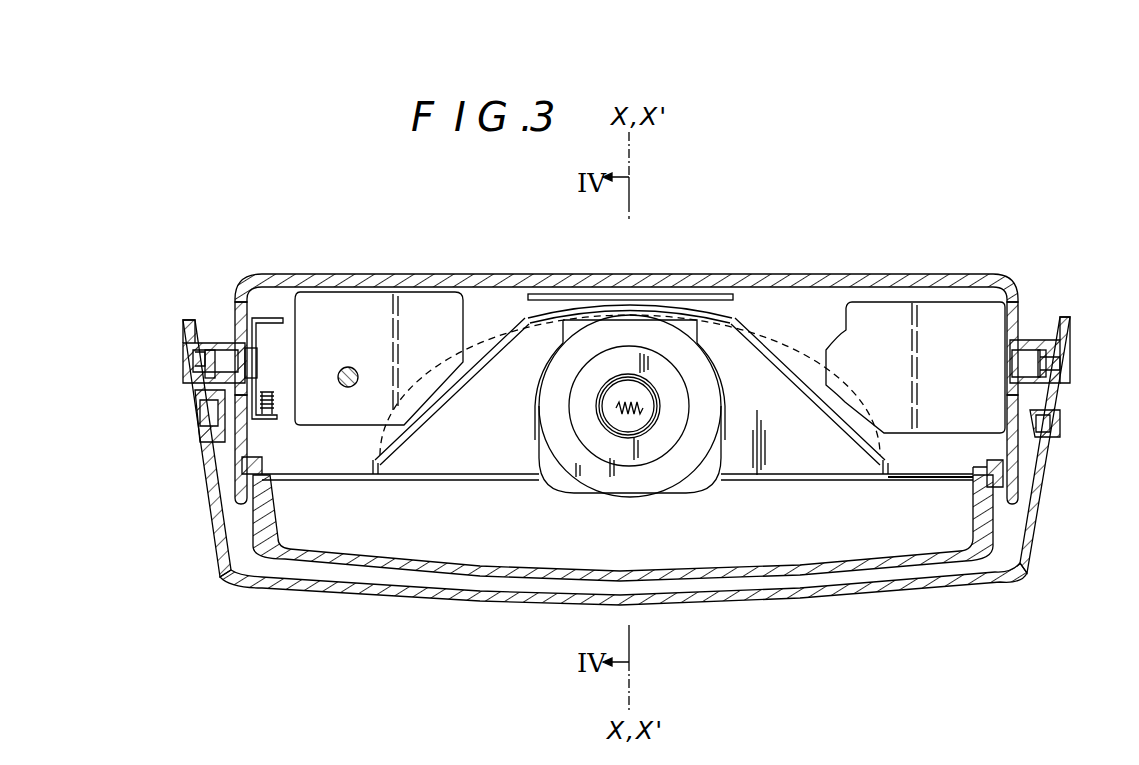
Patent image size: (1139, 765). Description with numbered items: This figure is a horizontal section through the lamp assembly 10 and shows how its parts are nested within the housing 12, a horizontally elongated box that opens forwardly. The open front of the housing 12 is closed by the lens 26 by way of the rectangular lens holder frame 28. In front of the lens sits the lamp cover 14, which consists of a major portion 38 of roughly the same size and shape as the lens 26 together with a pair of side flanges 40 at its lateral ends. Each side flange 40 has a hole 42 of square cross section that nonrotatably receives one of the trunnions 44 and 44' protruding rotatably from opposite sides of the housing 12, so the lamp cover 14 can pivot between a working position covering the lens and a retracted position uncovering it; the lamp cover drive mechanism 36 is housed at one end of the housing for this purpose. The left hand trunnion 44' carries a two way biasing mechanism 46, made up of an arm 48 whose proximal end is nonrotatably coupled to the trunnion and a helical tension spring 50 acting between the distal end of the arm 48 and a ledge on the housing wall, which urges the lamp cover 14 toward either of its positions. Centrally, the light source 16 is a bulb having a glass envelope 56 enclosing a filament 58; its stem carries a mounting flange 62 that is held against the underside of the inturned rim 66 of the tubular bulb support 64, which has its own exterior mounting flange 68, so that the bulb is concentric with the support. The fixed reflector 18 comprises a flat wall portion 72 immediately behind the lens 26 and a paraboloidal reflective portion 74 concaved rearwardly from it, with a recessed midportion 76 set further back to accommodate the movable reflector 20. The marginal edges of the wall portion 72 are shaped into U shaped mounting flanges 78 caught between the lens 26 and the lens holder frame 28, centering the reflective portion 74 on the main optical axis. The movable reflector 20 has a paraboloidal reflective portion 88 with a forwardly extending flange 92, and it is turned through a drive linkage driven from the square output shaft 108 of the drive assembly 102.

The lamp assembly 10 is at (238, 226).
The housing 12 is at (992, 274).
The lamp cover 14 is at (1007, 585).
The light source 16 is at (666, 392).
The fixed reflector 18 is at (392, 464).
The movable reflector 20 is at (640, 298).
The lens 26 is at (417, 577).
The lens holder frame 28 is at (236, 485).
The lamp cover drive mechanism 36 is at (951, 312).
The major portion 38 is at (797, 593).
The side flanges 40 is at (200, 477).
The holes 42 is at (212, 352).
The trunnion 44 is at (1082, 350).
The left hand trunnion 44' is at (163, 355).
The two way biasing mechanism 46 is at (280, 348).
The arm 48 is at (254, 386).
The helical tension spring 50 is at (278, 398).
The glass envelope 56 is at (604, 408).
The filament 58 is at (616, 406).
The mounting flange 62 is at (602, 392).
The bulb support 64 is at (622, 490).
The inturned rim 66 is at (650, 447).
The mounting flange 68 is at (573, 450).
The flat wall portion 72 is at (926, 482).
The reflective portion 74 is at (789, 378).
The recessed midportion 76 is at (543, 310).
The mounting flanges 78 is at (264, 477).
The reflective portion 88 is at (672, 318).
The flange 92 is at (693, 480).
The drive assembly 102 is at (381, 299).
The output shaft 108 is at (358, 374).